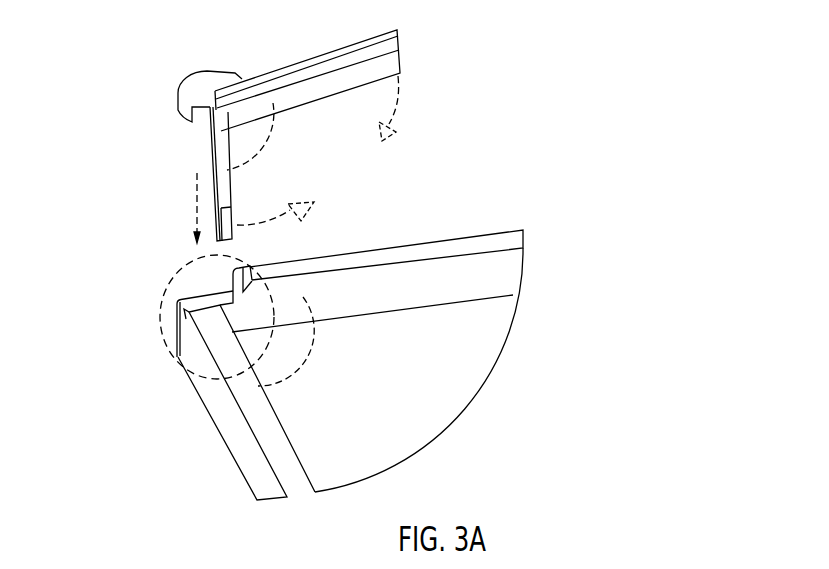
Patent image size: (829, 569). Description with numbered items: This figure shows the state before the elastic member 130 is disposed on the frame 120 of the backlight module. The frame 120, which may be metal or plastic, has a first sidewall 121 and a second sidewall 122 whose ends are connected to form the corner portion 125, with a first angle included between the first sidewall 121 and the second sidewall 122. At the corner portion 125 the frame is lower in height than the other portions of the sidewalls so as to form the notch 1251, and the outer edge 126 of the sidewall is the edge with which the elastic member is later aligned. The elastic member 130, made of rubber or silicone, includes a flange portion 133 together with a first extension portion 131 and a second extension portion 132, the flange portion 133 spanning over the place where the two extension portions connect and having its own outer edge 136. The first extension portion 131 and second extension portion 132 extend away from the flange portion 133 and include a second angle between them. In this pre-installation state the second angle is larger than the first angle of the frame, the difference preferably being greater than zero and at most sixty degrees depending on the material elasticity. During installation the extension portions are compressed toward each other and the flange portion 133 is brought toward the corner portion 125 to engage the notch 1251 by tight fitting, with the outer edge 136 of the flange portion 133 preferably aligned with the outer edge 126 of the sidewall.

The frame 120 is at (512, 370).
The first sidewall 121 is at (450, 238).
The second sidewall 122 is at (245, 455).
The corner portion 125 is at (168, 318).
The notch 1251 is at (207, 291).
The outer edge of the sidewall 126 is at (181, 299).
The elastic member 130 is at (170, 62).
The first extension portion 131 is at (318, 52).
The second extension portion 132 is at (218, 157).
The flange portion 133 is at (209, 75).
The outer edge of the flange portion 136 is at (178, 109).